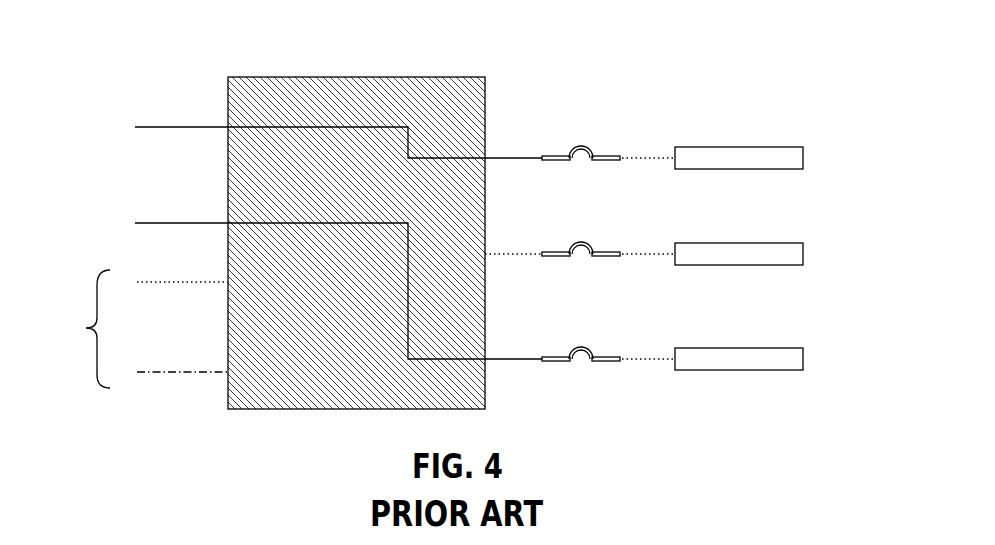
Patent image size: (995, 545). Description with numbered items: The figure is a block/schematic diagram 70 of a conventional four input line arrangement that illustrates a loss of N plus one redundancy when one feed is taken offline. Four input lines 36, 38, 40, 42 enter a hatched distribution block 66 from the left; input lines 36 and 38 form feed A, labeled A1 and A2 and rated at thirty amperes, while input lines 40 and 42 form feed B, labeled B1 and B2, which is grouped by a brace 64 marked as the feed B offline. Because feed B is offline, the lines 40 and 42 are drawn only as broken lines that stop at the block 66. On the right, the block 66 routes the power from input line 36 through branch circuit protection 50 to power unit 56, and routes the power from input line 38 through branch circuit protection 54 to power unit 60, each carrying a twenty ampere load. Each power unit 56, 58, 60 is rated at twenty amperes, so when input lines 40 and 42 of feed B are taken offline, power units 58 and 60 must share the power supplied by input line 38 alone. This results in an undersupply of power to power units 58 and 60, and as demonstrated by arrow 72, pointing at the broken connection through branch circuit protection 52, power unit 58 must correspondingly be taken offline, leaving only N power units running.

The input line 36 is at (188, 128).
The input line 38 is at (188, 224).
The input line 40 is at (188, 283).
The input line 42 is at (188, 373).
The branch circuit protection 50 is at (578, 144).
The branch circuit protection 52 is at (588, 241).
The branch circuit protection 54 is at (578, 346).
The power unit 56 is at (803, 157).
The power unit 58 is at (803, 253).
The power unit 60 is at (803, 358).
The feed B off line 64 is at (108, 272).
The power distribution block 66 is at (485, 97).
The block/schematic diagram 70 is at (757, 100).
The arrow 72 is at (509, 240).